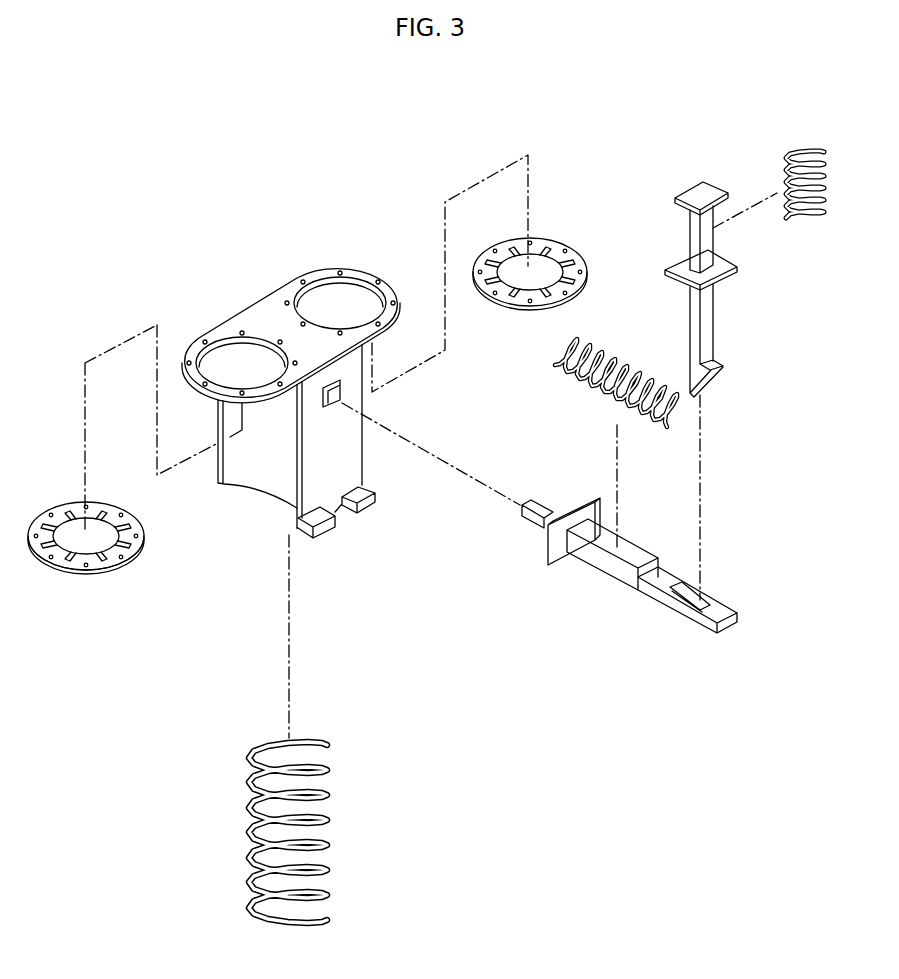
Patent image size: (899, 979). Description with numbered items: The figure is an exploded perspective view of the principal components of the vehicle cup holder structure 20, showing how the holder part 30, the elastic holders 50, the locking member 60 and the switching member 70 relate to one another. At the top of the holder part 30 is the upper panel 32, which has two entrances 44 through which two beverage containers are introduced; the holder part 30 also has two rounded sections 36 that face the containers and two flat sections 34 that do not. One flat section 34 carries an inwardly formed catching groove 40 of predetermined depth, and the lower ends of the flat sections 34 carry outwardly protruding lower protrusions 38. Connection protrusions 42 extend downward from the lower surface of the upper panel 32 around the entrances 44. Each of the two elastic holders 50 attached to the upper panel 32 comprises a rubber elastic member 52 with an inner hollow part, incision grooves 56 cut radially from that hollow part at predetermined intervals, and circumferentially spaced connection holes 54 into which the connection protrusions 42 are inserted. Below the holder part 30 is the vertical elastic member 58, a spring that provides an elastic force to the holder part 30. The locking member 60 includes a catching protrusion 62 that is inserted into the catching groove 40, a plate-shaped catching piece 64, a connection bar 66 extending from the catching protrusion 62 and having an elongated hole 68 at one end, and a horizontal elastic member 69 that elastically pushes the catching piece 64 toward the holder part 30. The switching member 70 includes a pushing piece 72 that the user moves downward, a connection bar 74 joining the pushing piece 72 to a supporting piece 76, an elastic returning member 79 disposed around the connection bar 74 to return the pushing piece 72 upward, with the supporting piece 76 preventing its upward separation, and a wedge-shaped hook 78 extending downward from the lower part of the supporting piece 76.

The fastening assembly 20 is at (182, 207).
The holder part 30 is at (283, 252).
The upper panel 32 is at (260, 320).
The flat sections 34 is at (330, 450).
The rounded sections 36 is at (282, 458).
The lower protrusions 38 is at (327, 530).
The catching groove 40 is at (335, 394).
The connection protrusions 42 is at (340, 272).
The entrances 44 is at (360, 300).
The elastic holders 50 is at (74, 597).
The elastic member 52 is at (133, 557).
The connection holes 54 is at (138, 532).
The incision grooves 56 is at (82, 498).
The vertical elastic member 58 is at (302, 820).
The locking member 60 is at (668, 660).
The catching protrusion 62 is at (522, 507).
The catching piece 64 is at (547, 558).
The connection bar 66 is at (623, 572).
The elongated hole 68 is at (665, 587).
The horizontal elastic member 69 is at (614, 364).
The switching member 70 is at (704, 140).
The pushing piece 72 is at (695, 194).
The connection bar 74 is at (705, 245).
The supporting piece 76 is at (715, 270).
The wedge-shaped hook 78 is at (713, 377).
The elastic returning member 79 is at (792, 157).